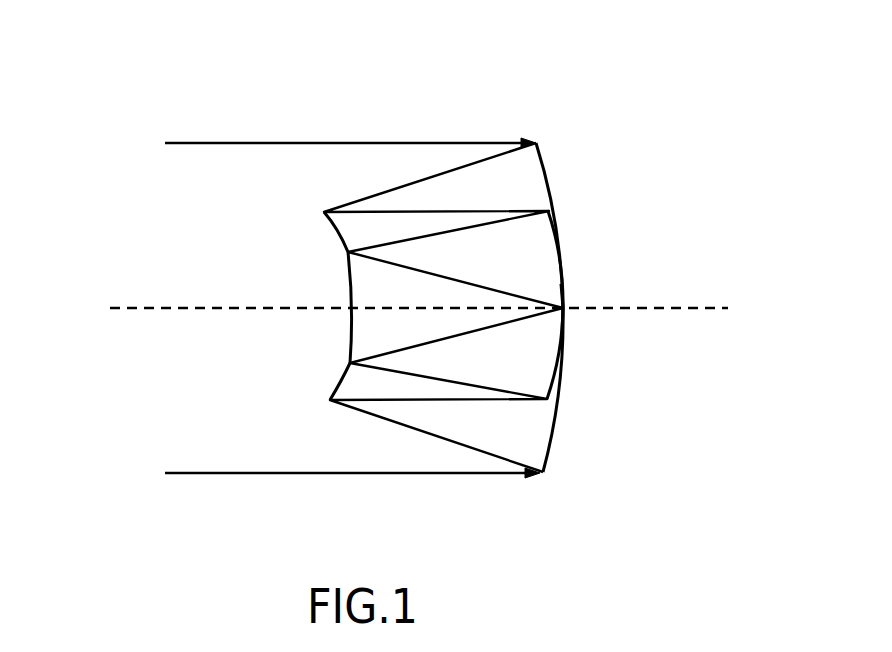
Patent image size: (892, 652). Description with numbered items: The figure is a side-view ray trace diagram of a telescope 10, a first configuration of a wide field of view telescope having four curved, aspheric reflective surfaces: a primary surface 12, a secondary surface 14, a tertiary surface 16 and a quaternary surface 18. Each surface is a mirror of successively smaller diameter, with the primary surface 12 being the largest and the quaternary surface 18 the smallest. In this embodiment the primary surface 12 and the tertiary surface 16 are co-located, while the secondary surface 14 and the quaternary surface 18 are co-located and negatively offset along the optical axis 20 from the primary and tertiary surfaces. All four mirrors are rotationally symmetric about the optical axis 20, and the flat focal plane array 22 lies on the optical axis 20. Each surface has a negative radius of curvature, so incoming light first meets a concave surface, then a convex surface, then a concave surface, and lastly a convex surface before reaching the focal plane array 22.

The telescope 10 is at (117, 83).
The primary surface 12 is at (553, 212).
The secondary surface 14 is at (335, 238).
The tertiary surface 16 is at (549, 388).
The quaternary surface 18 is at (350, 362).
The optical axis 20 is at (727, 308).
The flat focal plane array 22 is at (566, 305).